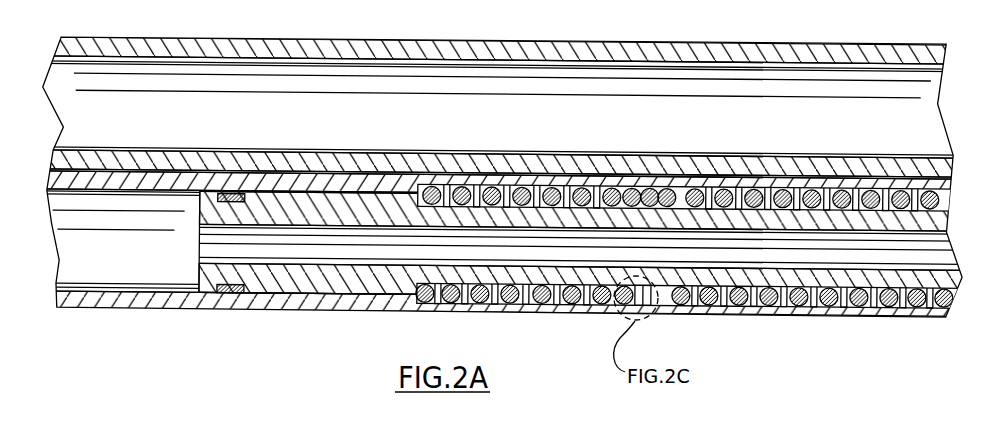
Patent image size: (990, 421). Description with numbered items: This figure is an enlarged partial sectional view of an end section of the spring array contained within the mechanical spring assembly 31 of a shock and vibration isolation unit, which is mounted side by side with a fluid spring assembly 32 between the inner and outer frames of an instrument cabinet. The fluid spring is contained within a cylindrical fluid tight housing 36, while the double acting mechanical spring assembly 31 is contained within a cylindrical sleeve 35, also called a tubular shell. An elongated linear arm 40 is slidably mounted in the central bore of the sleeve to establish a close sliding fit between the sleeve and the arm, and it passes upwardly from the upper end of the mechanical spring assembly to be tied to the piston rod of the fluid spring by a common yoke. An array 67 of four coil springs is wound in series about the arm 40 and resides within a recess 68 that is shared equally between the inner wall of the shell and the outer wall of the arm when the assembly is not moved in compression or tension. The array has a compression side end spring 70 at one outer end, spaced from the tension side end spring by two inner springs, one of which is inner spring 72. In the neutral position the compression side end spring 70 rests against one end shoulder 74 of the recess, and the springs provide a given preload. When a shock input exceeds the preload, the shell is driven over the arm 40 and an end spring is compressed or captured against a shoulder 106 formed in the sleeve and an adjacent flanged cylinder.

The fluid spring assembly 32 is at (514, 31).
The cylindrical fluid tight housing 36 is at (705, 44).
The shoulder of the recess 106 is at (637, 200).
The cylindrical sleeve 35 is at (77, 308).
The mechanical spring assembly 31 is at (246, 327).
The linear arm 40 is at (324, 292).
The end shoulder of the recess 74 is at (389, 303).
The compression side end spring 70 is at (542, 303).
The recess 68 is at (589, 303).
The array of coil springs 67 is at (747, 322).
The inner spring 72 is at (811, 304).